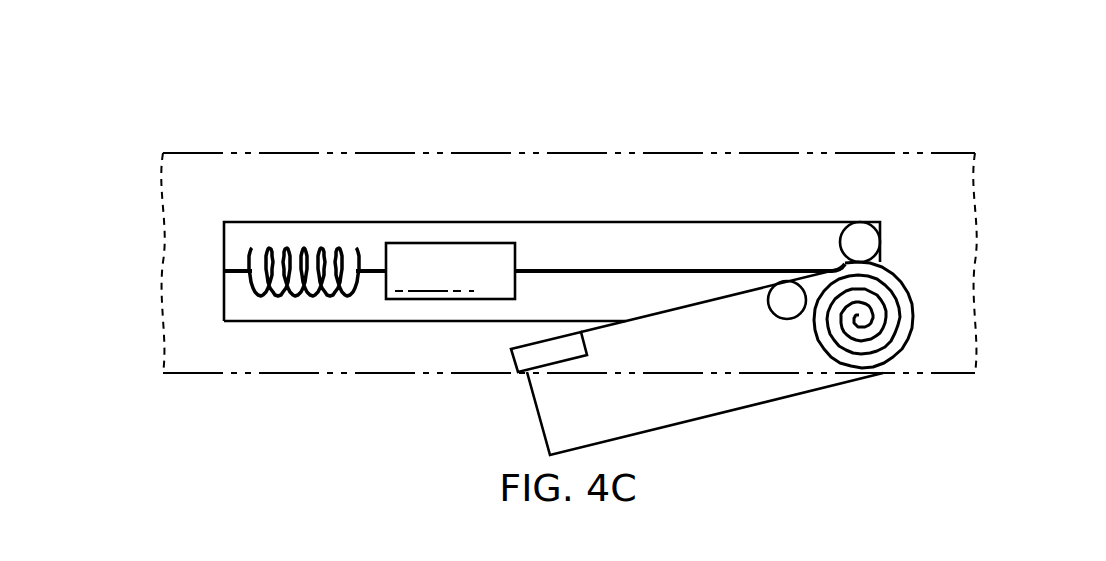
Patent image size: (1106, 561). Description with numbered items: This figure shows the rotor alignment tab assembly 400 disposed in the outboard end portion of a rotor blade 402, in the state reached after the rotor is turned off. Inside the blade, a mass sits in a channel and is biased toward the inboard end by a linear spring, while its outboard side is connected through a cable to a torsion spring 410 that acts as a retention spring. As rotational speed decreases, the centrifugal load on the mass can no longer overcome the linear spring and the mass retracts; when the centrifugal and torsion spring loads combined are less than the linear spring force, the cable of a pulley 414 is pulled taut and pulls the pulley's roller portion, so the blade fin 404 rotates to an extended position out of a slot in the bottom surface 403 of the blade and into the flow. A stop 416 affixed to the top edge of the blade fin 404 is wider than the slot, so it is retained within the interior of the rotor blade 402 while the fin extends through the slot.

The rotor alignment tab assembly 400 is at (366, 136).
The rotor blade 402 is at (1001, 265).
The bottom surface 403 is at (296, 374).
The blade fin 404 is at (705, 405).
The torsion spring 410 is at (812, 331).
The pulley 414 is at (897, 275).
The stop 416 is at (512, 362).